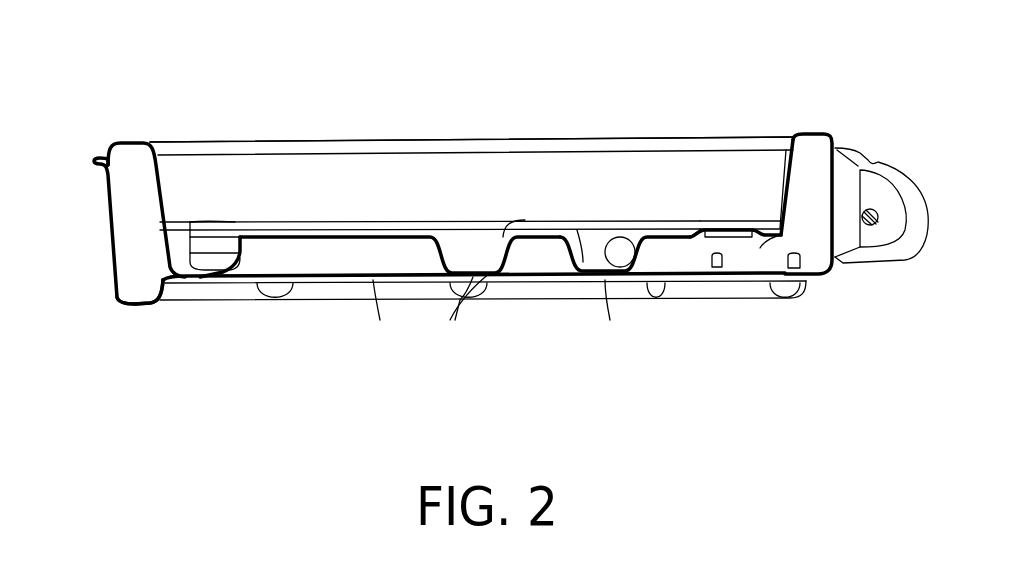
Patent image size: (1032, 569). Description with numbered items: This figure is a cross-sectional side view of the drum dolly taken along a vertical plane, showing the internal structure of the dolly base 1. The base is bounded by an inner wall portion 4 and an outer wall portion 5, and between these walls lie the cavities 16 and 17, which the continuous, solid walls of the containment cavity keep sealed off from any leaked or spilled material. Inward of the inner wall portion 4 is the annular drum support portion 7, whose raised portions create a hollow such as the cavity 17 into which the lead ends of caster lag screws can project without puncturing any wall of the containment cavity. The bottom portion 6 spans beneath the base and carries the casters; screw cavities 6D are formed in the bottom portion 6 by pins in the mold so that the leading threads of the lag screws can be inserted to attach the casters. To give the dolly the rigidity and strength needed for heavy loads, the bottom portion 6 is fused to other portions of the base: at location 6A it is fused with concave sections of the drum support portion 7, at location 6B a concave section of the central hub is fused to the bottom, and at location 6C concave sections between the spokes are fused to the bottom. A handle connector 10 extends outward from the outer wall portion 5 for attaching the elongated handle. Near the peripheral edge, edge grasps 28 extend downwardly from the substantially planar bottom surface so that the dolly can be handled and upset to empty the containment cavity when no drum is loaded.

The dolly base 1 is at (451, 124).
The inner wall portion 4 is at (780, 178).
The outer wall portion 5 is at (108, 256).
The bottom portion 6 is at (376, 280).
The fusing location 6A is at (211, 279).
The fusing location 6B is at (480, 280).
The fusing location 6C is at (620, 278).
The screw cavities 6D is at (780, 221).
The drum support portion 7 is at (202, 124).
The handle connector 10 is at (903, 157).
The cavity 16 is at (113, 236).
The cavity 17 is at (658, 265).
The edge grasps 28 is at (137, 304).